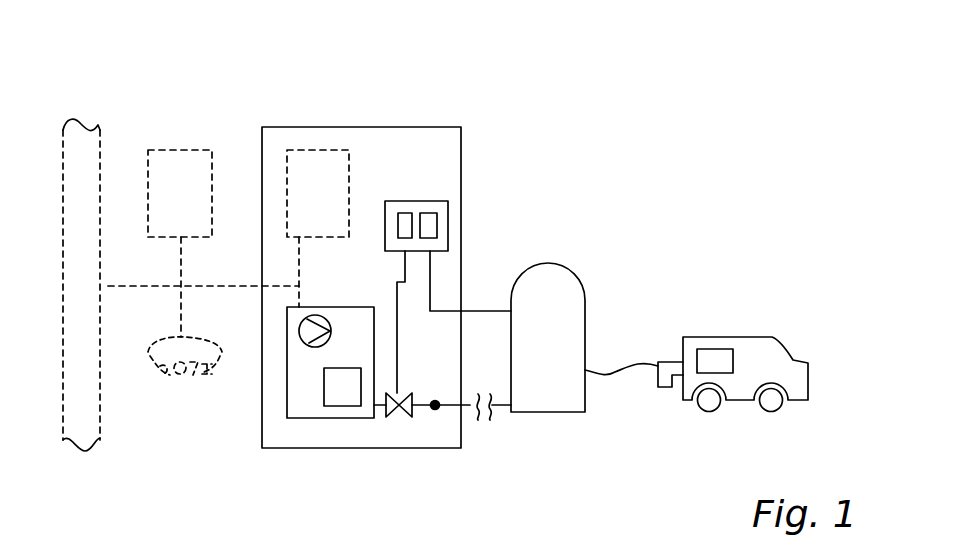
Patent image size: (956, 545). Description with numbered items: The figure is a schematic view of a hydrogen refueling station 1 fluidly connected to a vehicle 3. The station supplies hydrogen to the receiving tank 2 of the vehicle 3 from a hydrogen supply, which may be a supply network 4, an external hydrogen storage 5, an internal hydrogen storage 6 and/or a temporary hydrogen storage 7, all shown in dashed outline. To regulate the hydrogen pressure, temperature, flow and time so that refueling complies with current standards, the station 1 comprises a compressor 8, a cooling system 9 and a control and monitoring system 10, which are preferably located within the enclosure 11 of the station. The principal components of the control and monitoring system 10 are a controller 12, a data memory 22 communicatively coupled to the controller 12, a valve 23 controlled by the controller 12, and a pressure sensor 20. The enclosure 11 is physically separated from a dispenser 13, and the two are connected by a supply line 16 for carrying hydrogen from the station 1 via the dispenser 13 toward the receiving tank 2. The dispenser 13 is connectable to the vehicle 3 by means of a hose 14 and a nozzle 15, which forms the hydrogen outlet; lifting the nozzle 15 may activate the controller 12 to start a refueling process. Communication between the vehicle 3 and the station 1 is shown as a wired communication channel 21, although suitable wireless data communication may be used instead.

The hydrogen refueling station 1 is at (653, 93).
The receiving tank 2 is at (717, 349).
The vehicle 3 is at (783, 358).
The supply network 4 is at (95, 137).
The external hydrogen storage 5 is at (184, 150).
The internal hydrogen storage 6 is at (315, 150).
The temporary hydrogen storage 7 is at (196, 372).
The compressor 8 is at (300, 328).
The cooling system 9 is at (342, 407).
The control and monitoring system 10 is at (449, 232).
The enclosure 11 is at (371, 127).
The controller 12 is at (407, 210).
The dispenser 13 is at (577, 268).
The hose 14 is at (628, 358).
The nozzle 15 is at (660, 390).
The supply line 16 is at (494, 412).
The pressure sensor 20 is at (435, 400).
The wired communication channel 21 is at (478, 311).
The data memory 22 is at (432, 211).
The valve 23 is at (398, 418).